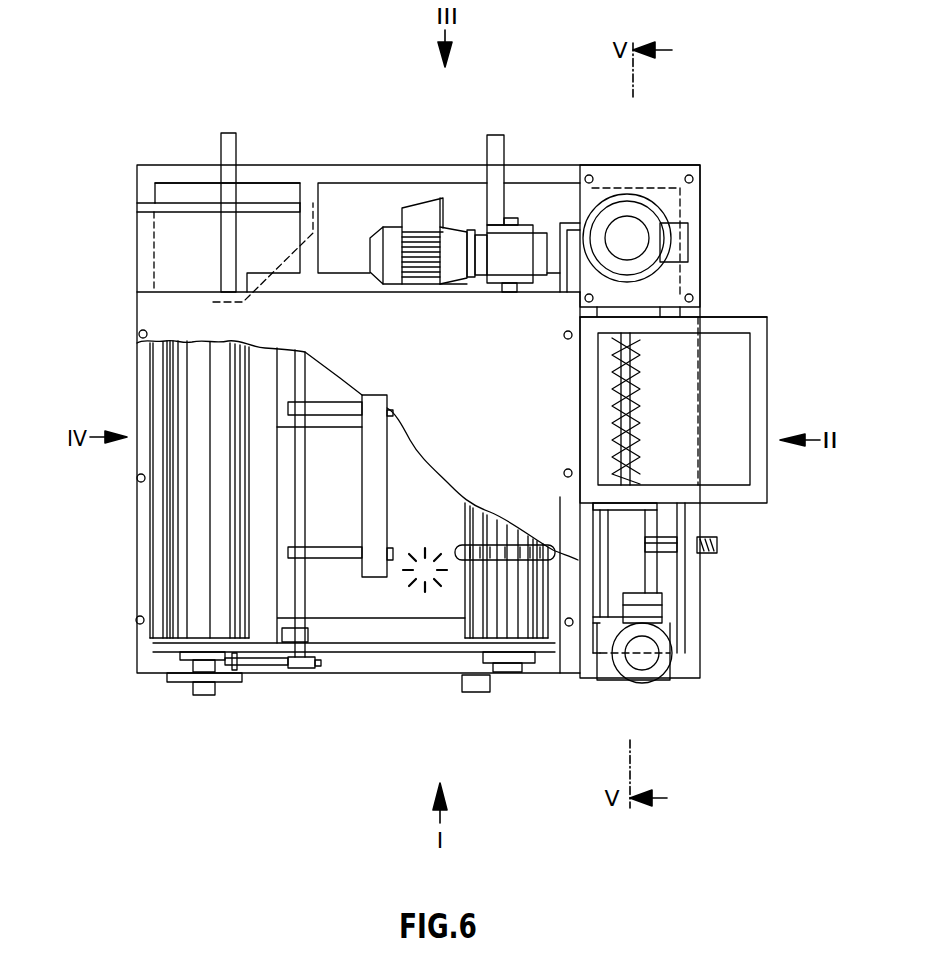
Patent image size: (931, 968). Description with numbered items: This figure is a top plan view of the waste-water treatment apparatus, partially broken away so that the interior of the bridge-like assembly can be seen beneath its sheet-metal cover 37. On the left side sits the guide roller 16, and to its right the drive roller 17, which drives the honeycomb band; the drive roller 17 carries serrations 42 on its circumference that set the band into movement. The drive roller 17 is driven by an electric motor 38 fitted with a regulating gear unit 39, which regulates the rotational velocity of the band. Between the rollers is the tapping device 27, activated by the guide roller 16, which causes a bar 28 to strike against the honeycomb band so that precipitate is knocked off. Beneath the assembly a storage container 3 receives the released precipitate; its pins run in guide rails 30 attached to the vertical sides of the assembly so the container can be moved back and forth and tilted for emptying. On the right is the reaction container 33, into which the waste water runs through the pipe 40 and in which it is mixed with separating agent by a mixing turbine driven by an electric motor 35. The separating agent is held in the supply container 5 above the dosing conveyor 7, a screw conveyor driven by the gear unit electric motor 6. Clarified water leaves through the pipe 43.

The storage container 3 is at (287, 283).
The supply container 5 is at (731, 431).
The electric motor 6 is at (643, 660).
The dosing conveyor 7 is at (625, 380).
The guide roller 16 is at (235, 530).
The drive roller 17 is at (470, 625).
The tapping device 27 is at (300, 472).
The bar 28 is at (372, 522).
The guide rails 30 is at (227, 245).
The reaction container 33 is at (270, 192).
The electric motor 35 is at (648, 220).
The cover 37 is at (447, 375).
The electric motor 38 is at (375, 238).
The regulating gear unit 39 is at (522, 247).
The pipe 40 is at (716, 545).
The serrations 42 is at (513, 550).
The pipe 43 is at (473, 680).